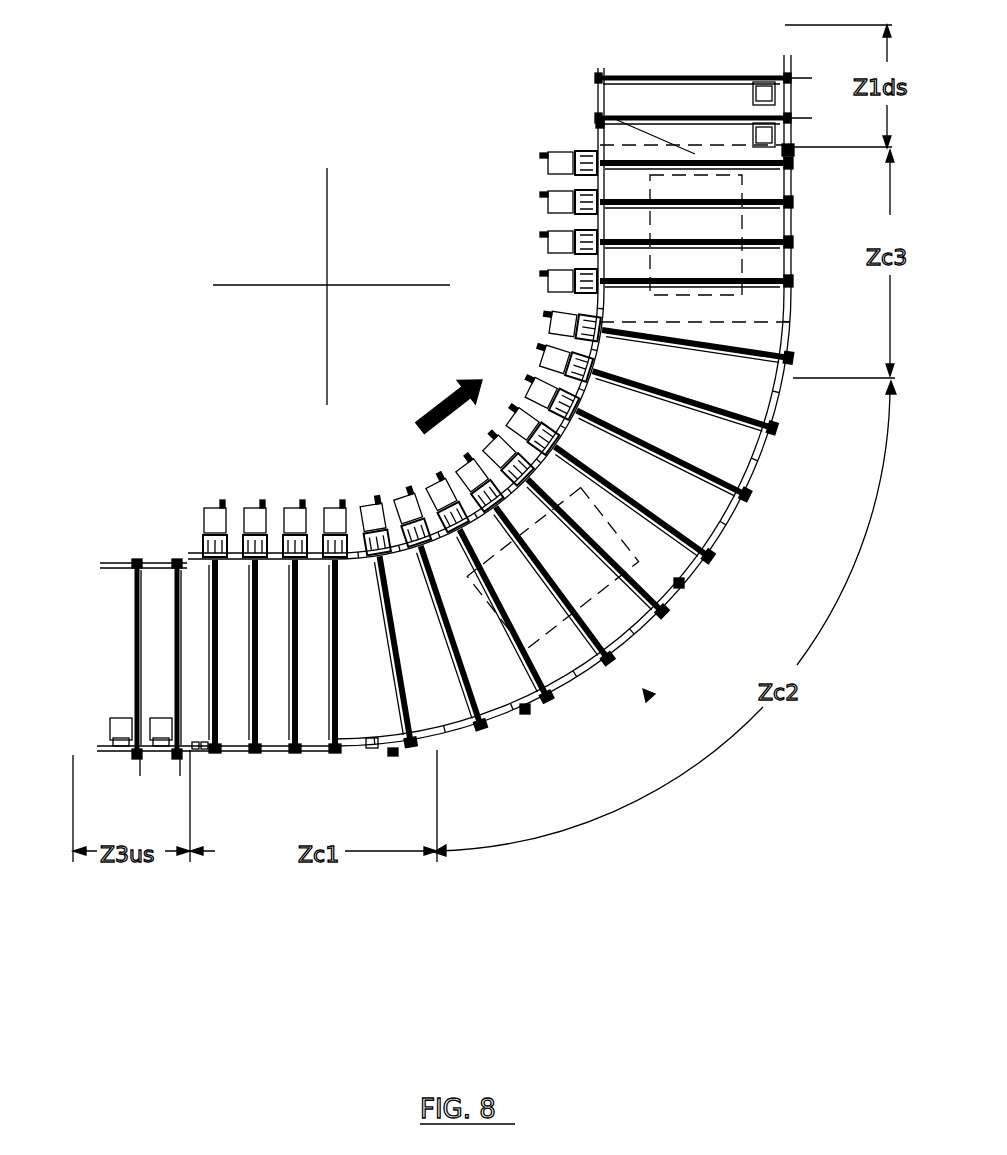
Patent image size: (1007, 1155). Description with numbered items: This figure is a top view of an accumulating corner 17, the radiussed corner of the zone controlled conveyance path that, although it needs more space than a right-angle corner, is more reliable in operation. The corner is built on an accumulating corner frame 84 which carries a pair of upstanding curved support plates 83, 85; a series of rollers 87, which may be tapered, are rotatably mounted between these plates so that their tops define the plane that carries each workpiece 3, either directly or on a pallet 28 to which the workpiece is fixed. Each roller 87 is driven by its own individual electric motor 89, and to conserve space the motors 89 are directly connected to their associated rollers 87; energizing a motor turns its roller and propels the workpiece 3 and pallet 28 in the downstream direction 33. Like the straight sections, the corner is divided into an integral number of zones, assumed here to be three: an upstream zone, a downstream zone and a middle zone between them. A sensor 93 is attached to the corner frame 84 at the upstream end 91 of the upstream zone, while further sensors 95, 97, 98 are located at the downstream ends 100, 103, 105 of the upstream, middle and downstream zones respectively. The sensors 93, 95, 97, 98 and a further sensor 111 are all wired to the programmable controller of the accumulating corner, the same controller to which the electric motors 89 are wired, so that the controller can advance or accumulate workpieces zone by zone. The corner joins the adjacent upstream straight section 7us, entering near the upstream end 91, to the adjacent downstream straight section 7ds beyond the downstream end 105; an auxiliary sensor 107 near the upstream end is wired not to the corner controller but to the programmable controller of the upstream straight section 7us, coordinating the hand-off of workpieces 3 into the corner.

The downstream straight section 7ds is at (598, 78).
The upstream straight section 7us is at (103, 556).
The downstream end of zone Zc3 105 is at (598, 118).
The sensor 111 is at (597, 123).
The sensor 98 is at (792, 150).
The pallet 28 is at (545, 170).
The electric motor 89 is at (548, 247).
The roller 87 is at (545, 330).
The curved support plate 85 is at (538, 367).
The downstream direction 33 is at (457, 393).
The workpiece 3 is at (742, 216).
The downstream end of zone Zc2 103 is at (680, 362).
The upstream end of zone Zc1 91 is at (205, 640).
The downstream end of zone Zc1 100 is at (388, 684).
The sensor 97 is at (682, 586).
The accumulating corner 17 is at (648, 695).
The accumulating corner frame 84 is at (526, 711).
The sensor 93 is at (201, 752).
The auxiliary sensor 107 is at (212, 757).
The sensor 95 is at (372, 752).
The curved support plate 83 is at (395, 752).